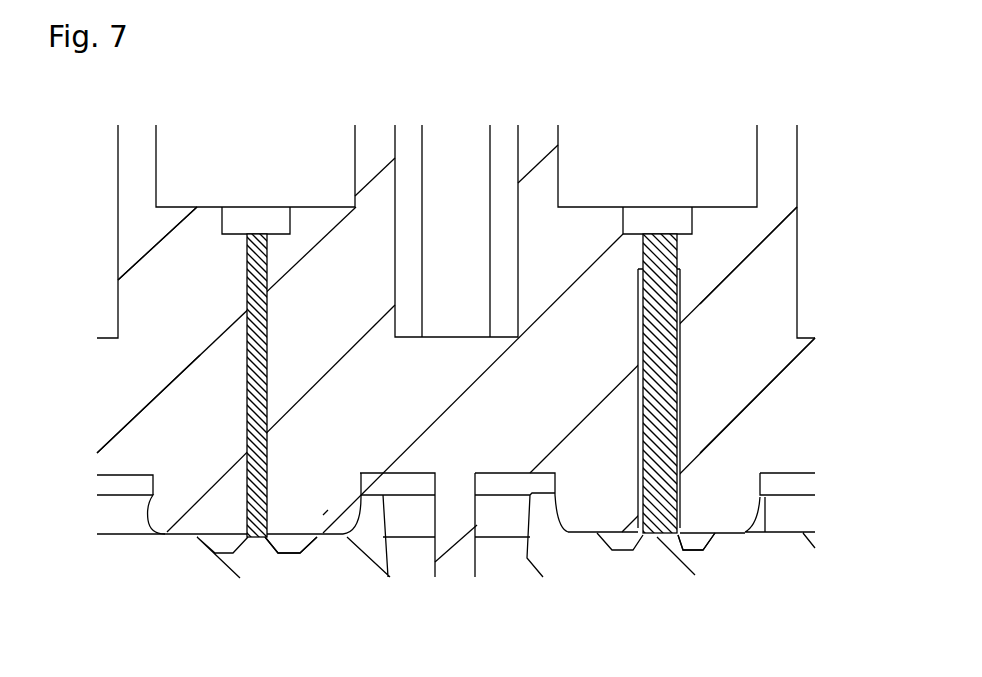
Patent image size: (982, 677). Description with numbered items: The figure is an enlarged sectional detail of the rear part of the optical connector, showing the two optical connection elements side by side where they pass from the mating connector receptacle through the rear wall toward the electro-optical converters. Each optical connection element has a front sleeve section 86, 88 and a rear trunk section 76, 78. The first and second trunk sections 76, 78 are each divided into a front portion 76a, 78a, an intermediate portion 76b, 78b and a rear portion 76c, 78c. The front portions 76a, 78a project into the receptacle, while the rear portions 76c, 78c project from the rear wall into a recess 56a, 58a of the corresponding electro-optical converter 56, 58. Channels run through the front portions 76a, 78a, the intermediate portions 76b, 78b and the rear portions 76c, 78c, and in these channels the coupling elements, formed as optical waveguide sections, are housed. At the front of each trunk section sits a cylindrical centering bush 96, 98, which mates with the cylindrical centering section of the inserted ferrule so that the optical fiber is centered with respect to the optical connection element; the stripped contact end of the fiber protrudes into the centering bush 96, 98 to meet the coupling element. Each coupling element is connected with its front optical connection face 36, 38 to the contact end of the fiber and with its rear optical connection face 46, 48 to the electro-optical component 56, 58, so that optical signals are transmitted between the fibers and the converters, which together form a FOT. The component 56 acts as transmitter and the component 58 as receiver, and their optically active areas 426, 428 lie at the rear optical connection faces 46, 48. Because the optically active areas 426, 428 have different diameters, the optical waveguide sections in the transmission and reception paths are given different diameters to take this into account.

The front optical connection face 36 is at (256, 226).
The front optical connection face 38 is at (660, 226).
The rear optical connection face 46 is at (256, 545).
The rear optical connection face 48 is at (649, 544).
The electro-optical component 56 is at (390, 555).
The recess 56a is at (318, 536).
The electro-optical component 58 is at (527, 557).
The recess 58a is at (583, 518).
The rear trunk section 76 is at (188, 310).
The front portion 76a is at (158, 263).
The intermediate portion 76b is at (163, 372).
The rear portion 76c is at (170, 500).
The rear trunk section 78 is at (757, 350).
The front portion 78a is at (762, 283).
The intermediate portion 78b is at (750, 380).
The rear portion 78c is at (730, 507).
The front sleeve section 86 is at (130, 160).
The front sleeve section 88 is at (779, 157).
The cylindrical centering bush 96 is at (277, 218).
The cylindrical centering bush 98 is at (680, 215).
The optically active area 426 is at (273, 527).
The optically active area 428 is at (693, 528).